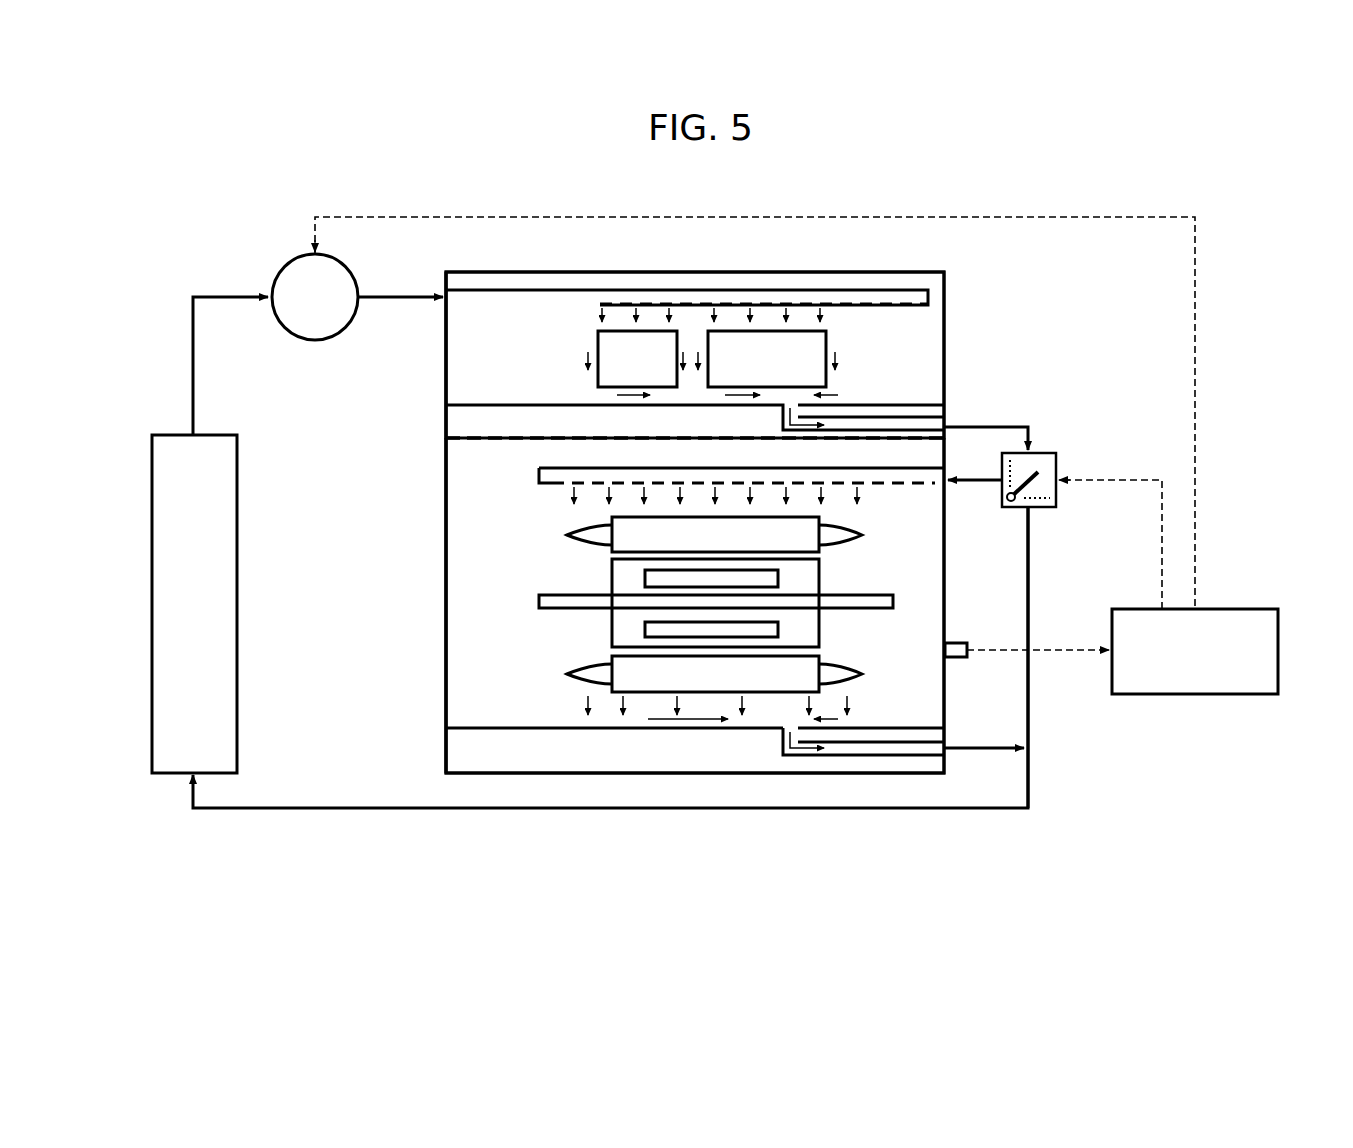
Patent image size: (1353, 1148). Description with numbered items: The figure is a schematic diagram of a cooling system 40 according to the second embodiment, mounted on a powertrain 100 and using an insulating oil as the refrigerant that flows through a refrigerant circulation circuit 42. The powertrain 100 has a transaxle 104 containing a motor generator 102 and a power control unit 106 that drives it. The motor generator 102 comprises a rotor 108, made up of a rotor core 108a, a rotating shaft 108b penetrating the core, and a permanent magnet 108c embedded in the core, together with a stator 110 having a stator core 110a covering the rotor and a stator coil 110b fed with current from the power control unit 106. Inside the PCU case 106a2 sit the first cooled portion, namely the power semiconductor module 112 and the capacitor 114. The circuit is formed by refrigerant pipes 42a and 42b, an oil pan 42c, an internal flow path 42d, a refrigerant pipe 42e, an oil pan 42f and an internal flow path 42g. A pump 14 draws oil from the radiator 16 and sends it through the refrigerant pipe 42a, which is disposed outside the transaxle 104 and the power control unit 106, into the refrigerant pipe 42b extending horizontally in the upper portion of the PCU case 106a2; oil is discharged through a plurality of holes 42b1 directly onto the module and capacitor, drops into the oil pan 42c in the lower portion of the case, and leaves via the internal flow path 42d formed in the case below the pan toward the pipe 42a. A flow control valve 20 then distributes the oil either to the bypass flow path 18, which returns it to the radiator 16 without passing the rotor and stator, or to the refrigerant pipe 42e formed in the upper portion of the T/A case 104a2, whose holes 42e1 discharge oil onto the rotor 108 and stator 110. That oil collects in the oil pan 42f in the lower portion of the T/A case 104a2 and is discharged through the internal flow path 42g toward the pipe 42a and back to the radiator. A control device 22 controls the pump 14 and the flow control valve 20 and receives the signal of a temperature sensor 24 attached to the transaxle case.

The cooling system 40 is at (222, 240).
The pump 14 is at (297, 258).
The radiator 16 is at (165, 435).
The bypass flow path 18 is at (1030, 595).
The flow control valve 20 is at (1060, 447).
The control device 22 is at (1225, 609).
The temperature sensor 24 is at (963, 640).
The refrigerant circulation circuit 42 is at (607, 833).
The refrigerant pipe 42a is at (237, 295).
The refrigerant pipe 42b is at (530, 303).
The holes 42b1 is at (602, 303).
The oil pan 42c is at (920, 408).
The internal flow path 42d is at (918, 422).
The refrigerant pipe 42e is at (945, 498).
The holes 42e1 is at (573, 483).
The oil pan 42f is at (920, 732).
The internal flow path 42g is at (868, 750).
The powertrain 100 is at (314, 503).
The motor generator 102 is at (535, 677).
The transaxle 104 is at (437, 560).
The T/A case 104a2 is at (446, 607).
The power control unit 106 is at (438, 383).
The PCU case 106a2 is at (446, 350).
The rotor 108 is at (598, 575).
The rotor core 108a is at (820, 575).
The rotating shaft 108b is at (830, 595).
The permanent magnet 108c is at (645, 628).
The stator 110 is at (560, 512).
The stator core 110a is at (820, 660).
The stator coil 110b is at (580, 665).
The power semiconductor module 112 is at (708, 335).
The capacitor 114 is at (598, 340).